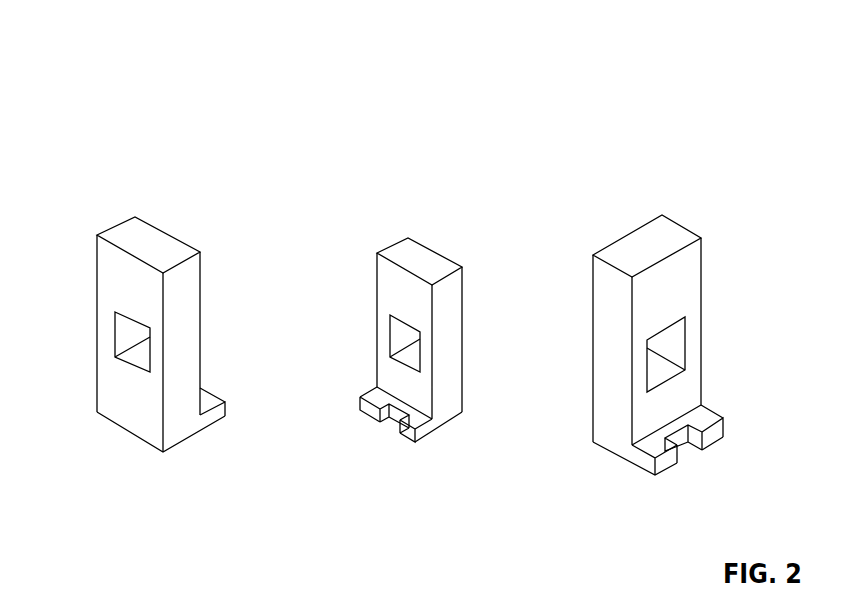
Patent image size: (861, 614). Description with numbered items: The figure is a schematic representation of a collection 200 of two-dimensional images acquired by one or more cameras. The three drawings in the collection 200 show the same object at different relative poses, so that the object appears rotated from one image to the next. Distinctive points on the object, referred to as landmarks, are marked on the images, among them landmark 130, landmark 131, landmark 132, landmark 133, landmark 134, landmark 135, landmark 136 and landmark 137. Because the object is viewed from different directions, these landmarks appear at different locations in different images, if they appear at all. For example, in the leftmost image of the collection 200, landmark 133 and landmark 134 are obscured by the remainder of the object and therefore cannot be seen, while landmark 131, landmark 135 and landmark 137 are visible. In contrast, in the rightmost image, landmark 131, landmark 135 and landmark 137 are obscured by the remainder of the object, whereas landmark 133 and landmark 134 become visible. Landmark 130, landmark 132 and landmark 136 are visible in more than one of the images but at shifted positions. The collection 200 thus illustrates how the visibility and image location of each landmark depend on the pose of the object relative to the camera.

The collection of two-dimensional images 200 is at (225, 90).
The landmark 130 is at (163, 274).
The landmark 131 is at (117, 313).
The landmark 132 is at (134, 215).
The landmark 133 is at (412, 427).
The landmark 134 is at (412, 440).
The landmark 135 is at (151, 375).
The landmark 136 is at (163, 452).
The landmark 137 is at (97, 412).